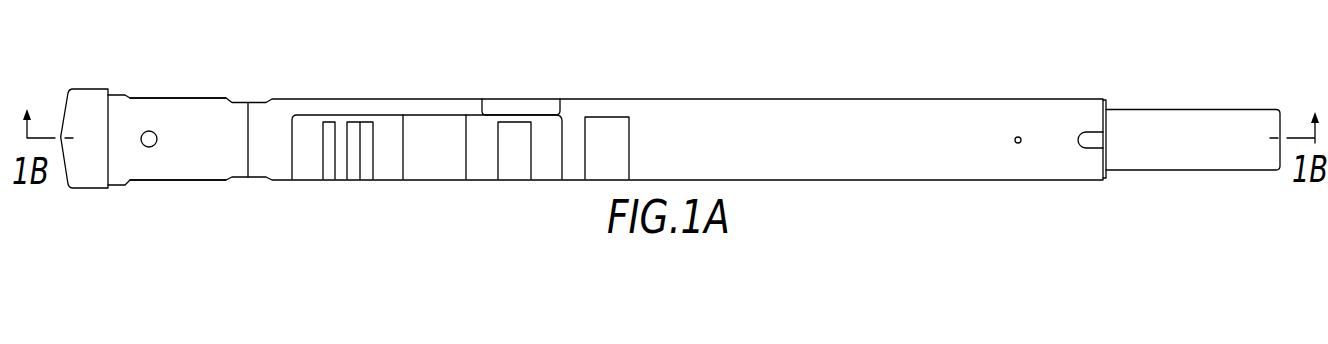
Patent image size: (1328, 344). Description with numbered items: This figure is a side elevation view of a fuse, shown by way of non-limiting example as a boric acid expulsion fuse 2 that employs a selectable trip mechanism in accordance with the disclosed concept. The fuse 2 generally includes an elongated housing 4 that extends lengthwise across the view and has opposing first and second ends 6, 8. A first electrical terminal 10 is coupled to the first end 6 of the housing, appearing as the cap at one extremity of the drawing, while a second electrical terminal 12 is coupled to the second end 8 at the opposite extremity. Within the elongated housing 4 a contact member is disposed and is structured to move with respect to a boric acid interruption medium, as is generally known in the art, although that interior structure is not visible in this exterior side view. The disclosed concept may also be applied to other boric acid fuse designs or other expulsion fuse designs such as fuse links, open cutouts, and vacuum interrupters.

The boric acid expulsion fuse 2 is at (347, 228).
The elongated housing 4 is at (753, 113).
The first end 6 is at (237, 189).
The second end 8 is at (1103, 97).
The first electrical terminal 10 is at (93, 97).
The second electrical terminal 12 is at (1204, 113).